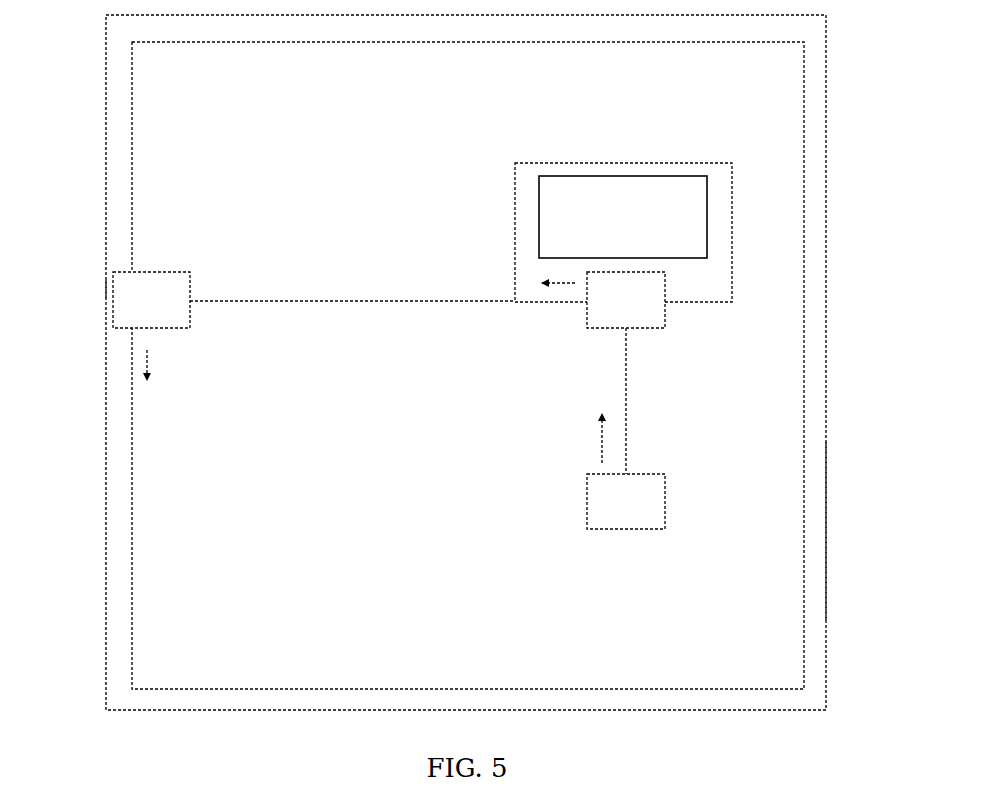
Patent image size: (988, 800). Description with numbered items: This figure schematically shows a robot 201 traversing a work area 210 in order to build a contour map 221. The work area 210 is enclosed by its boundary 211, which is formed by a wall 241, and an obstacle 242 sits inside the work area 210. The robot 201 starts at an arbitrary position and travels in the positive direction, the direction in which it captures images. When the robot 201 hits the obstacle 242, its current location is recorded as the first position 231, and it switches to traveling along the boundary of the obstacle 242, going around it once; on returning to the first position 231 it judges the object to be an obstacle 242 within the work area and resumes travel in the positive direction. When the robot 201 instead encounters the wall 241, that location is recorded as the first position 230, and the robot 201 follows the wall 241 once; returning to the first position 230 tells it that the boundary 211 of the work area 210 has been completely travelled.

The robot 201 is at (389, 400).
The work area 210 is at (826, 325).
The boundary of the work area 211 is at (826, 393).
The contour map 221 is at (803, 118).
The first position 230 is at (190, 312).
The first position 231 is at (645, 328).
The wall 241 is at (106, 291).
The obstacle 242 is at (623, 232).